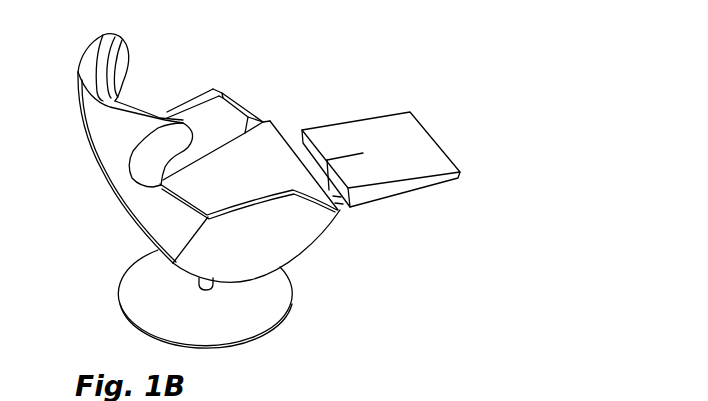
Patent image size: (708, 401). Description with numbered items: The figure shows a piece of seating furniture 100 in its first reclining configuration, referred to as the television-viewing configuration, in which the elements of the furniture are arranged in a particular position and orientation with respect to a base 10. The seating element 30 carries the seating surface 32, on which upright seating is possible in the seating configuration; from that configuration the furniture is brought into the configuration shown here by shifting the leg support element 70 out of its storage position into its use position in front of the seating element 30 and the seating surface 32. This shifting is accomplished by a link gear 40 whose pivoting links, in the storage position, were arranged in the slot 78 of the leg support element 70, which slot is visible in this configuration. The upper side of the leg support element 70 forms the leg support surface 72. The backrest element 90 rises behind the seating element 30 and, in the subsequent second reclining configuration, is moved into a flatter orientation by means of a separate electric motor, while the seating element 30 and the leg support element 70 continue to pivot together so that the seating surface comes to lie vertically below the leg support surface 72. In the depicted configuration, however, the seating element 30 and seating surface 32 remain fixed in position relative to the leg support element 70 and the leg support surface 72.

The base 10 is at (268, 341).
The piece of seating furniture 100 is at (179, 61).
The seating element 30 is at (260, 180).
The seating surface 32 is at (237, 170).
The link gear 40 is at (343, 213).
The leg support element 70 is at (402, 143).
The leg support surface 72 is at (379, 138).
The slot 78 is at (337, 160).
The backrest element 90 is at (90, 186).